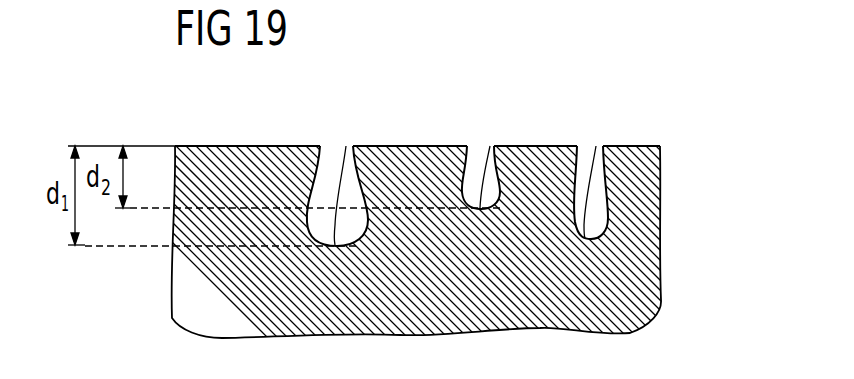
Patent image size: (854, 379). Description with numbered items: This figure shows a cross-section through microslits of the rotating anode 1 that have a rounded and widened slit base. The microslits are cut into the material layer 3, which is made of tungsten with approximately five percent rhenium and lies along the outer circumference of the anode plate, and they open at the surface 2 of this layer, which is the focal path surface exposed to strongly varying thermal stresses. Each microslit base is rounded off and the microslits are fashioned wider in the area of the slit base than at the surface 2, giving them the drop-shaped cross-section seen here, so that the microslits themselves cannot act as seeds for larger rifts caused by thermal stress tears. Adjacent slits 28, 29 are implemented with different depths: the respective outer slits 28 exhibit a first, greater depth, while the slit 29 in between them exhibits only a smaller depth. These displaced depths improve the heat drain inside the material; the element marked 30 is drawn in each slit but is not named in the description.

The rotating anode 1 is at (640, 86).
The focal path surface 2 is at (275, 145).
The material layer 3 is at (655, 258).
The outer slits 28 is at (322, 147).
The in-between slit 29 is at (474, 147).
The groove center line / undercut 30 is at (596, 146).